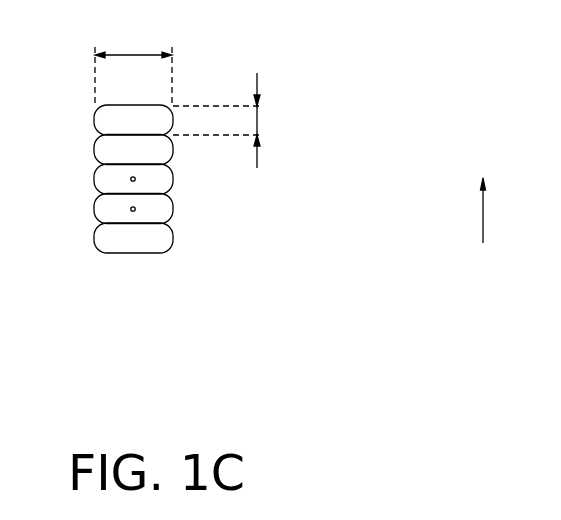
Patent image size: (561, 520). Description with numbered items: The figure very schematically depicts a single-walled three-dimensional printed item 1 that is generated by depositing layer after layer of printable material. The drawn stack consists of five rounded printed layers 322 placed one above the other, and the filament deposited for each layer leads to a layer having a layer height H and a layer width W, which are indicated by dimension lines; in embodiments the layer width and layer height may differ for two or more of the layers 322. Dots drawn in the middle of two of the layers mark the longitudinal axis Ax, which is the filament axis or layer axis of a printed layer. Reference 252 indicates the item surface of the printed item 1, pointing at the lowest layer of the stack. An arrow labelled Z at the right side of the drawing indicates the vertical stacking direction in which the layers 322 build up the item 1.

The 3D item 1 is at (153, 126).
The item surface 252 is at (173, 238).
The 3D printed layers 322 is at (188, 163).
The longitudinal axis Ax is at (81, 199).
The layer width W is at (133, 55).
The layer height H is at (258, 120).
The Z direction Z is at (495, 210).